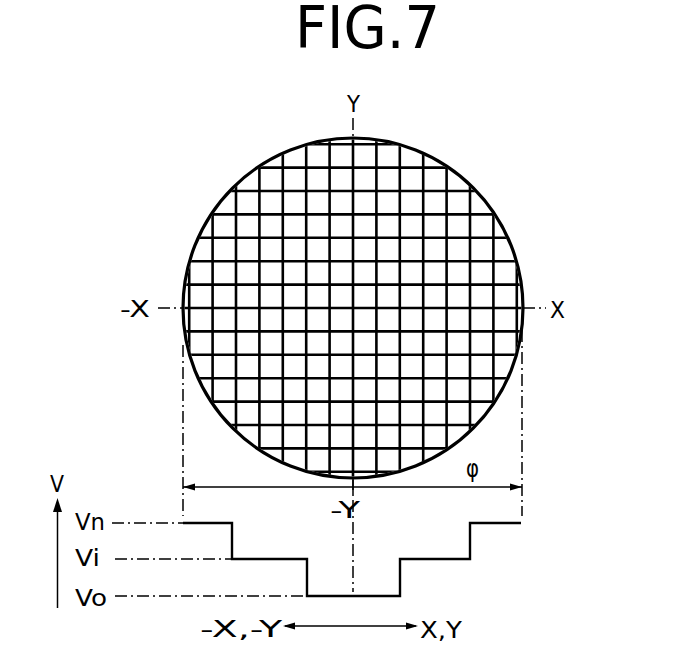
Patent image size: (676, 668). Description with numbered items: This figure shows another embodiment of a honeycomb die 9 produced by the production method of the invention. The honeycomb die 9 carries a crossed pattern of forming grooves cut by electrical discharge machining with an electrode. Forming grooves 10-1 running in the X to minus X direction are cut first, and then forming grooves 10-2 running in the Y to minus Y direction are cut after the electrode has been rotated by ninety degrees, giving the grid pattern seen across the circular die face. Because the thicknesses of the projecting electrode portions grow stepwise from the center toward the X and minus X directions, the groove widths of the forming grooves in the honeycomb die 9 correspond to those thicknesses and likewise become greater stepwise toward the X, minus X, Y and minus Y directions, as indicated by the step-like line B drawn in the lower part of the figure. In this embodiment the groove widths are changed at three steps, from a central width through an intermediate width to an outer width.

The honeycomb die 9 is at (504, 199).
The forming grooves 10-1 is at (292, 163).
The forming grooves 10-2 is at (354, 156).
The step-like line B is at (455, 563).